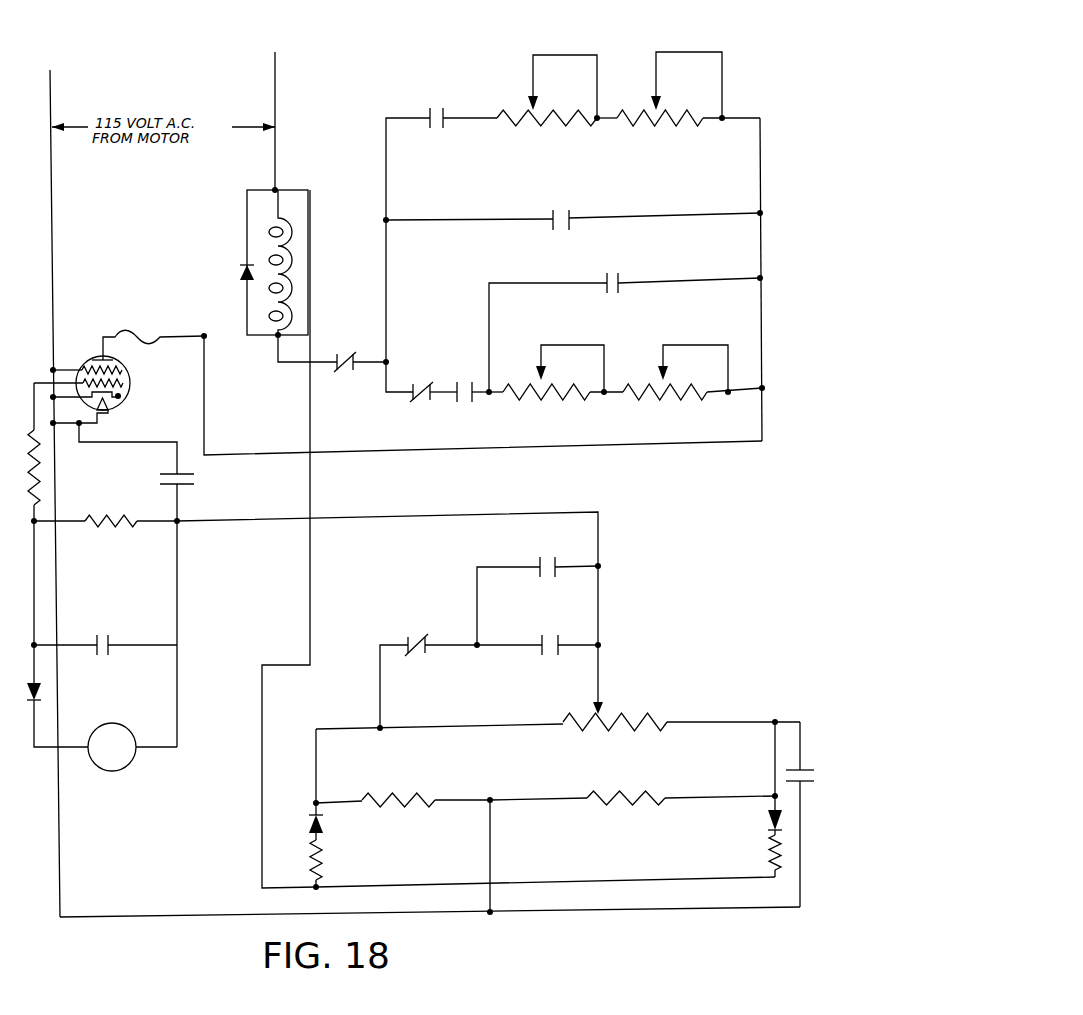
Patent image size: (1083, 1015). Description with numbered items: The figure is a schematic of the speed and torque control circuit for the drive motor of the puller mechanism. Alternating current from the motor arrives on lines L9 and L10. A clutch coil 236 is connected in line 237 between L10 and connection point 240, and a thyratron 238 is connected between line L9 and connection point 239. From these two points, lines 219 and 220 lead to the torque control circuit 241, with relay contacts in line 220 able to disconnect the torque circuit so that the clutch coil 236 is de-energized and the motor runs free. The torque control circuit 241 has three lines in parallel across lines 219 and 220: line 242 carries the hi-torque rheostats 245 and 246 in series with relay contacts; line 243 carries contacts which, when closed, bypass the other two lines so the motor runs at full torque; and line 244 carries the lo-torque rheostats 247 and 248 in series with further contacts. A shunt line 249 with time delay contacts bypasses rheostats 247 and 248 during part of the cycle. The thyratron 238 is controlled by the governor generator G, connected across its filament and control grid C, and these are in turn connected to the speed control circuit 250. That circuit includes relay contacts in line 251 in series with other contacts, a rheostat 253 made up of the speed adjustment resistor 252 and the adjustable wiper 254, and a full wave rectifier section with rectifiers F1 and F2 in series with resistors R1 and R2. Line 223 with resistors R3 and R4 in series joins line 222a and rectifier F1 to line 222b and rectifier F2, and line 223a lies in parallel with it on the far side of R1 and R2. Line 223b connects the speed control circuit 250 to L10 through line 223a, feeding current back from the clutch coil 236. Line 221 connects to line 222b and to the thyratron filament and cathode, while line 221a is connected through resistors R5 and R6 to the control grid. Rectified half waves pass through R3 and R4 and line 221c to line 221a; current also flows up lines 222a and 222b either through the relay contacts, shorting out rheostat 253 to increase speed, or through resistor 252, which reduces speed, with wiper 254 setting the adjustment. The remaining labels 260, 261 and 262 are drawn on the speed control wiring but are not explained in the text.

The line L9 is at (52, 241).
The line L10 is at (276, 111).
The clutch coil 236 is at (292, 226).
The line 237 is at (275, 198).
The thyratron 238 is at (86, 358).
The connection point 239 is at (203, 340).
The connection point 240 is at (272, 340).
The line 220 is at (288, 363).
The line 219 is at (276, 456).
The line 221 is at (397, 517).
The line 221a is at (172, 880).
The line 221c is at (491, 850).
The line 222a is at (358, 730).
The line 222b is at (719, 722).
The line 223 is at (556, 778).
The line 223a is at (640, 865).
The line 223b is at (313, 567).
The torque control circuit 241 is at (480, 74).
The line 242 is at (388, 120).
The line 243 is at (396, 220).
The line 244 is at (395, 398).
The rheostat 245 is at (704, 32).
The rheostat 246 is at (542, 55).
The rheostat 247 is at (676, 398).
The rheostat 248 is at (557, 398).
The line 249 is at (529, 283).
The speed control circuit 250 is at (634, 536).
The line 251 is at (382, 646).
The speed adjustment resistor 252 is at (563, 725).
The rheostat 253 is at (664, 706).
The wiper 254 is at (605, 710).
The conductor 260 is at (601, 645).
The conductor 261 is at (379, 727).
The conductor 262 is at (777, 720).
The resistor R1 is at (321, 860).
The resistor R2 is at (773, 866).
The resistor R3 is at (432, 806).
The resistor R4 is at (630, 795).
The resistor R5 is at (112, 529).
The resistor R6 is at (41, 473).
The rectifier F1 is at (321, 818).
The rectifier F2 is at (766, 818).
The control grid C is at (122, 390).
The governor generator G is at (128, 728).